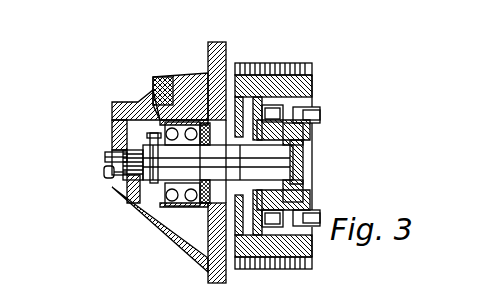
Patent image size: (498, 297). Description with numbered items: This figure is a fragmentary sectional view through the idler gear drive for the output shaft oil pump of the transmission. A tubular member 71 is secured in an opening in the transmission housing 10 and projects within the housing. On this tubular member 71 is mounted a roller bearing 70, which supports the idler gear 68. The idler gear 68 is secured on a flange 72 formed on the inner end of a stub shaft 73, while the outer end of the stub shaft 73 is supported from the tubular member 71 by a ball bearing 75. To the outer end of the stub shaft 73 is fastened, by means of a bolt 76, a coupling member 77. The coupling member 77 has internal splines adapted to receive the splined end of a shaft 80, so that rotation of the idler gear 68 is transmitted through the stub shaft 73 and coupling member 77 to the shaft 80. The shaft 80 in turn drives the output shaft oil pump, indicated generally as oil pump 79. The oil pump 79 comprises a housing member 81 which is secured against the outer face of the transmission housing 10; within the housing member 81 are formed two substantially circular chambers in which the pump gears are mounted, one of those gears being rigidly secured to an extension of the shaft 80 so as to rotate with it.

The transmission housing 10 is at (188, 73).
The idler gear 68 is at (310, 70).
The roller bearing 70 is at (269, 107).
The tubular member 71 is at (207, 212).
The flange 72 is at (305, 138).
The stub shaft 73 is at (293, 170).
The ball bearing 75 is at (153, 102).
The bolt 76 is at (112, 130).
The coupling member 77 is at (134, 210).
The output shaft oil pump 79 is at (104, 156).
The shaft 80 is at (104, 176).
The housing member 81 is at (155, 77).